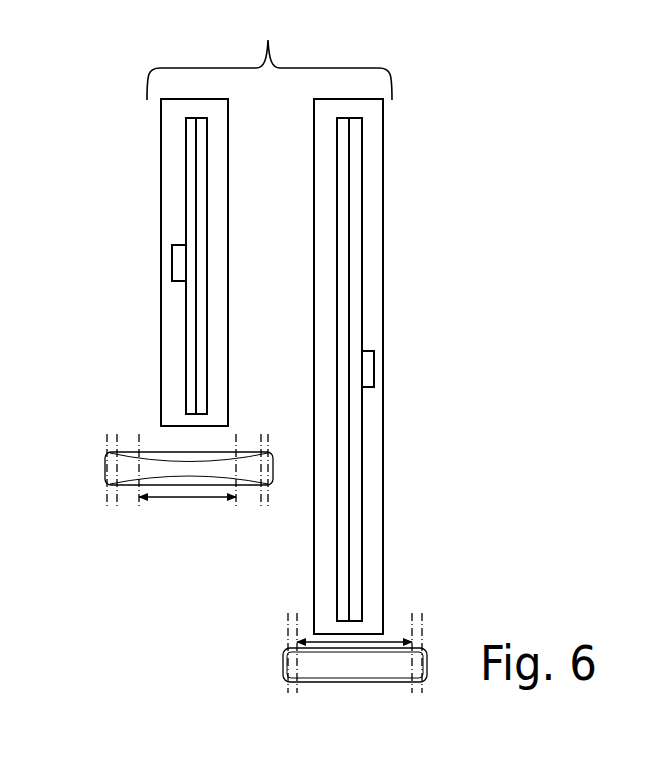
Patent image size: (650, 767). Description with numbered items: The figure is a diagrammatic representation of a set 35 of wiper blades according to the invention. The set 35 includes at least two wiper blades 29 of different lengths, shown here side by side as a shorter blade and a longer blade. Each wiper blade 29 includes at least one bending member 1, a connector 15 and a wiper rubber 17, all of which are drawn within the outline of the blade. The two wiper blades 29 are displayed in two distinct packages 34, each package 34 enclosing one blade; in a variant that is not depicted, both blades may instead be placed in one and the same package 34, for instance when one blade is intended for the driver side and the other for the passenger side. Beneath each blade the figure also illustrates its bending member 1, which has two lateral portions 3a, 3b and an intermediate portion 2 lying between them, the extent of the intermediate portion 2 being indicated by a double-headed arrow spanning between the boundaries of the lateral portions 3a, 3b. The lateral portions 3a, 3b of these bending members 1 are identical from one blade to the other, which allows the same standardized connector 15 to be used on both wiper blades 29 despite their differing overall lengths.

The set of wiper blades 35 is at (269, 54).
The bending member 1 is at (292, 366).
The wiper rubber 17 is at (206, 168).
The wiper blade 29 is at (290, 367).
The connector 15 is at (172, 263).
The package 34 is at (160, 415).
The intermediate portion 2 is at (188, 500).
The lateral portion 3a is at (265, 505).
The lateral portion 3b is at (110, 505).